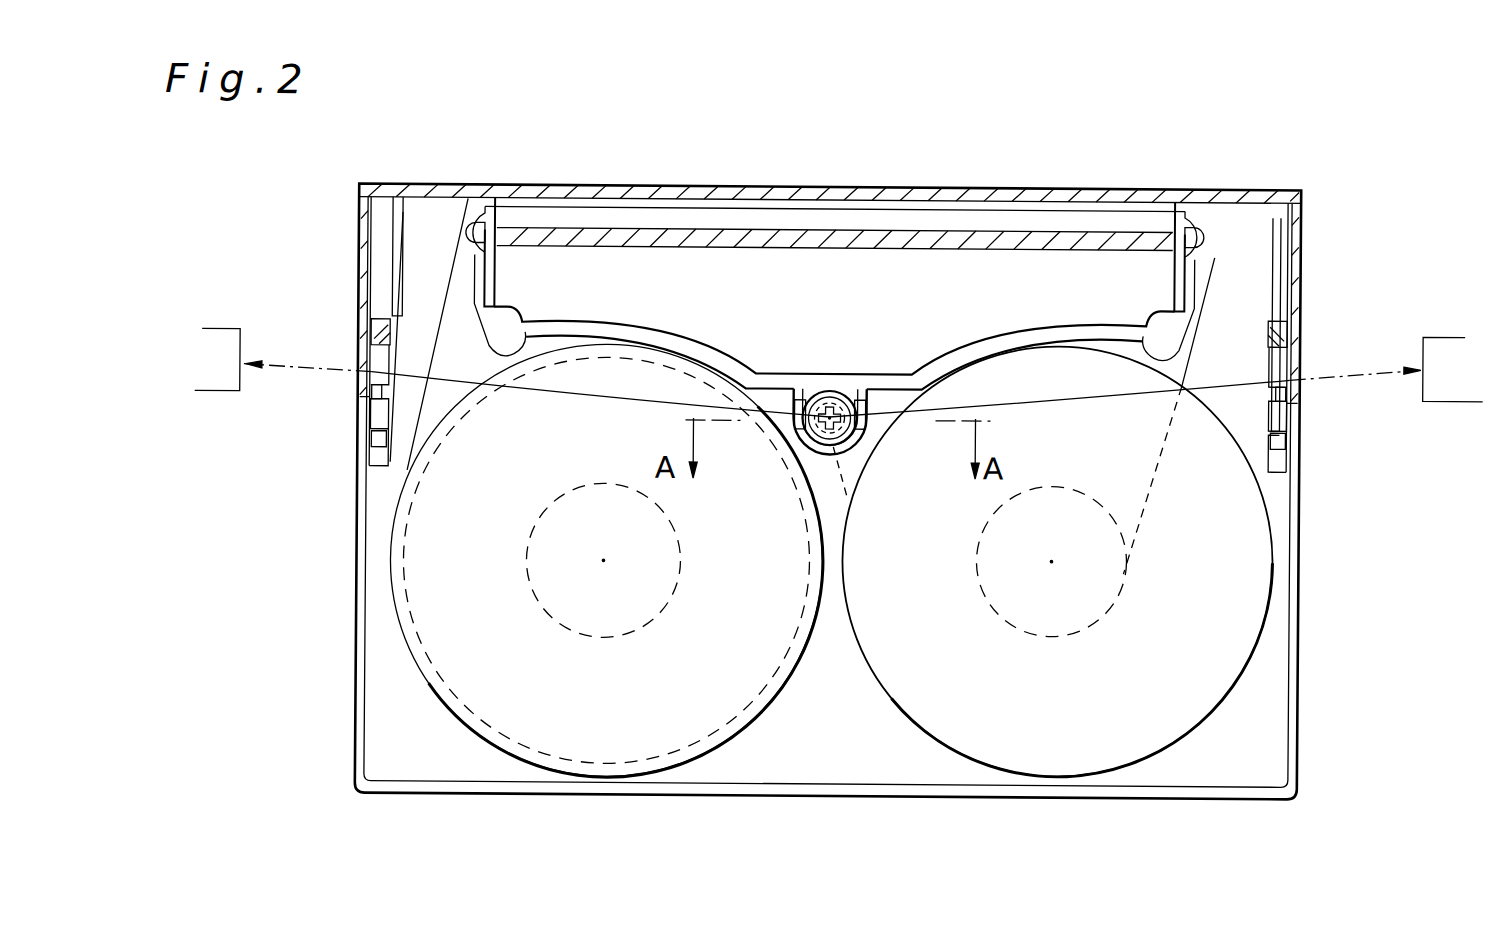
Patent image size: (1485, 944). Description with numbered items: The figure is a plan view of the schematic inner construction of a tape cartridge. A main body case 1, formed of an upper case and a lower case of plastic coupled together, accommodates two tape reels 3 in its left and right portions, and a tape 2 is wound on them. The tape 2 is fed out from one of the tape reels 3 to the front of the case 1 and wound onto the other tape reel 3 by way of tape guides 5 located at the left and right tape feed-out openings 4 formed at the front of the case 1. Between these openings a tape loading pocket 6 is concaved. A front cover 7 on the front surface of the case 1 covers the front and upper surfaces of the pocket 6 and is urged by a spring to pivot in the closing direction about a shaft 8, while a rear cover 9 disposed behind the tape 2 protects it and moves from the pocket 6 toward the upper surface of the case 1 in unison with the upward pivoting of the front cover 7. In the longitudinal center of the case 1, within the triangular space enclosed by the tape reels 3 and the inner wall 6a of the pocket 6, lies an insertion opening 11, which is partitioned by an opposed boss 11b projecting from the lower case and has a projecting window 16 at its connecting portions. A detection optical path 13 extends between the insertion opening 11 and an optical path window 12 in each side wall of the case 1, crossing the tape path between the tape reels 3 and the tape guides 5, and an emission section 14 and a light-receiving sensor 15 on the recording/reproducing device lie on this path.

The main body case 1 is at (834, 797).
The tape 2 is at (877, 218).
The tape reels 3 is at (870, 662).
The tape feed-out openings 4 is at (430, 223).
The tape guides 5 is at (473, 229).
The tape loading pocket 6 is at (834, 279).
The inner wall of the pocket 6a is at (885, 373).
The front cover 7 is at (676, 188).
The shaft 8 is at (367, 331).
The rear cover 9 is at (977, 242).
The insertion opening 11 is at (821, 389).
The boss 11b is at (808, 457).
The optical path window 12 is at (369, 395).
The detection optical path 13 is at (605, 401).
The emission section 14 is at (838, 453).
The light-receiving sensor 15 is at (212, 390).
The projecting window 16 is at (791, 425).